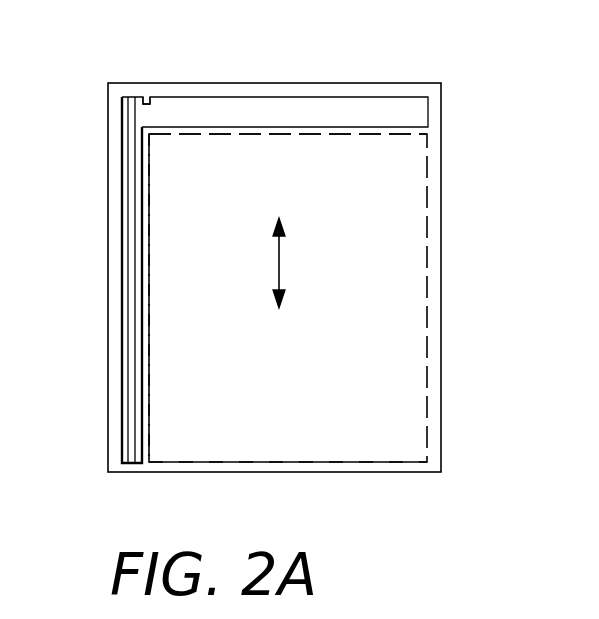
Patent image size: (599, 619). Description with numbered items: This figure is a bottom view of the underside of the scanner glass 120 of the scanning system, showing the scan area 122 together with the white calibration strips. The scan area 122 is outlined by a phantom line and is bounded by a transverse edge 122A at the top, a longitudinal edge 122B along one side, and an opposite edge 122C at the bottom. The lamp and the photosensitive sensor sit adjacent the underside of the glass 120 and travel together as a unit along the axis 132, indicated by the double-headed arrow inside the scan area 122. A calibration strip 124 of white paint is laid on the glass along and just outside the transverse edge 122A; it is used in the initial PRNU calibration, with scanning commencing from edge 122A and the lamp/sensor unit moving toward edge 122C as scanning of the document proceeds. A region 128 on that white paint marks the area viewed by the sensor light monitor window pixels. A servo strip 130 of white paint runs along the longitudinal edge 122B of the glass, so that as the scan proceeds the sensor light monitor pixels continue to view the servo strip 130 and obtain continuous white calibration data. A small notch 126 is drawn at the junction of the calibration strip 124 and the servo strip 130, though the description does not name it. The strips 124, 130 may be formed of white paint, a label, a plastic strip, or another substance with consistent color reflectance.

The scanner glass 120 is at (442, 230).
The scan area 122 is at (428, 400).
The transverse edge of the scan area 122A is at (337, 136).
The longitudinal edge 122B is at (150, 420).
The edge of the scan area 122C is at (362, 462).
The calibration strip 124 is at (368, 105).
The notch 126 is at (155, 97).
The region on the white paint 128 is at (122, 97).
The servo strip 130 is at (135, 313).
The axis 132 is at (279, 260).